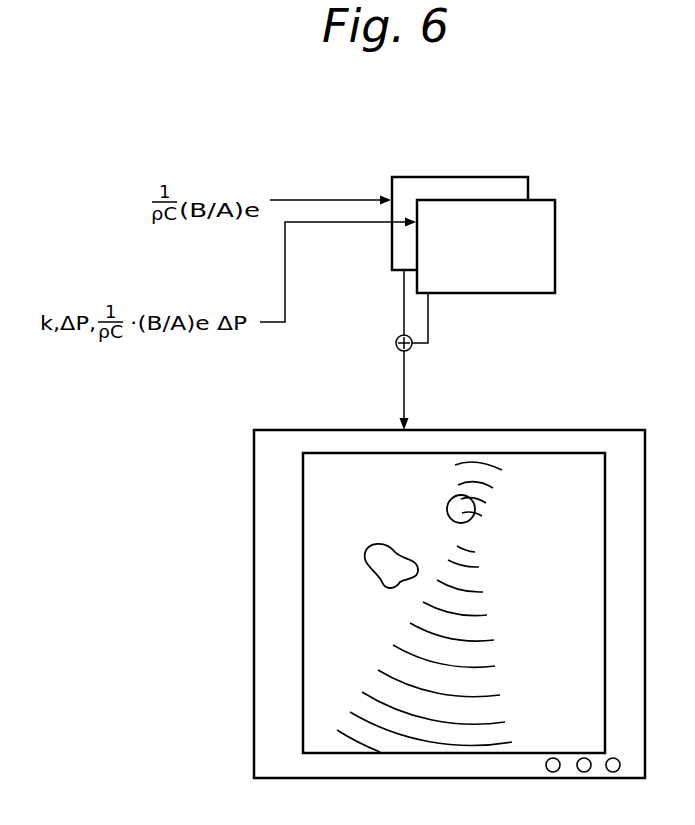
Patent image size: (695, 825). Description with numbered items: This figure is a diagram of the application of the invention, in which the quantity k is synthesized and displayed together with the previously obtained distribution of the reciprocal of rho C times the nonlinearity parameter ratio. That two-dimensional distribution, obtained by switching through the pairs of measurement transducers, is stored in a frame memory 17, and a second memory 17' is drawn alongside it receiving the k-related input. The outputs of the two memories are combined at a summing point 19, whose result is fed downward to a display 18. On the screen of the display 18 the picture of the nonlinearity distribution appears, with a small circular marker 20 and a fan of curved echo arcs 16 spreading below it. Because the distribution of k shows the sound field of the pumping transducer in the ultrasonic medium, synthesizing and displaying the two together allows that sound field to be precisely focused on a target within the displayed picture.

The echo pattern display 16 is at (492, 663).
The frame memory 17 is at (466, 198).
The frame memory 17' is at (502, 224).
The display monitor 18 is at (615, 428).
The adder 19 is at (395, 343).
The point target marker 20 is at (456, 496).